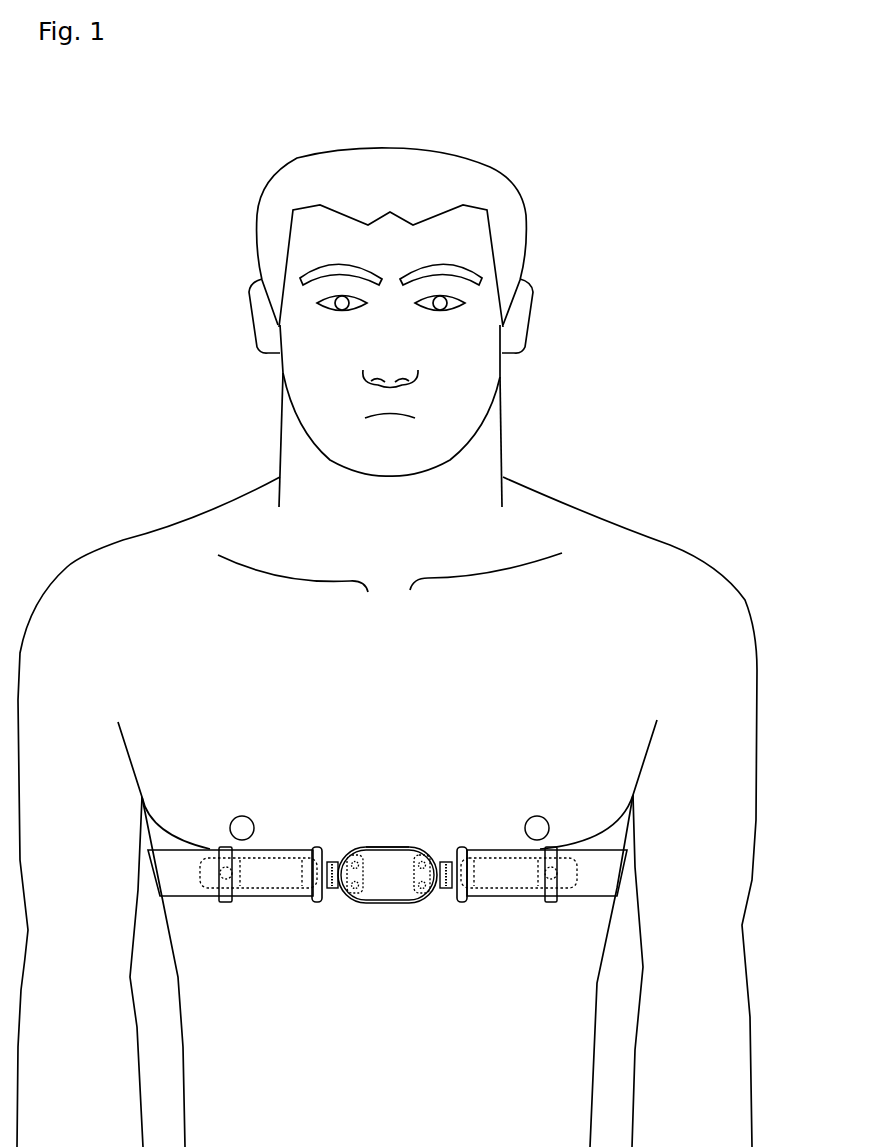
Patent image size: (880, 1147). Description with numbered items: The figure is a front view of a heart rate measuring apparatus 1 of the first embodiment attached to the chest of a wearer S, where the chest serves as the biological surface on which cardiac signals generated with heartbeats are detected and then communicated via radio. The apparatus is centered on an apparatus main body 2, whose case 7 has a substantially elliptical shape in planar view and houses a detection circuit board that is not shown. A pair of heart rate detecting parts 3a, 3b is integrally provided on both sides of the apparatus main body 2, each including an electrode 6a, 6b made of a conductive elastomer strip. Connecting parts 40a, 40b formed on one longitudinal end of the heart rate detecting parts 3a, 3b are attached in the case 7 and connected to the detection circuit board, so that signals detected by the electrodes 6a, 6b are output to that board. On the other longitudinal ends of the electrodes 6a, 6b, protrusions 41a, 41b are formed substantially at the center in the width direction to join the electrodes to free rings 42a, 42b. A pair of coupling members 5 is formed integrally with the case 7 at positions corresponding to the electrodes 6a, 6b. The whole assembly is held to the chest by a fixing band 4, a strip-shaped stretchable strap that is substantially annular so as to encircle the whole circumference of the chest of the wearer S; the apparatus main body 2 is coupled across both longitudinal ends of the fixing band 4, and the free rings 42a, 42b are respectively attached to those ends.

The wearer S is at (572, 508).
The heart rate measuring apparatus 1 is at (403, 830).
The apparatus main body 2 is at (387, 913).
The heart rate detecting part 3a is at (509, 901).
The heart rate detecting part 3b is at (269, 901).
The fixing band 4 is at (603, 840).
The coupling member 5 is at (332, 906).
The electrode 6a is at (508, 868).
The electrode 6b is at (272, 868).
The case 7 is at (368, 846).
The connecting part 40a is at (427, 839).
The connecting part 40b is at (351, 839).
The protrusion 41a is at (553, 846).
The protrusion 41b is at (225, 846).
The free ring 42a is at (553, 915).
The free ring 42b is at (223, 915).